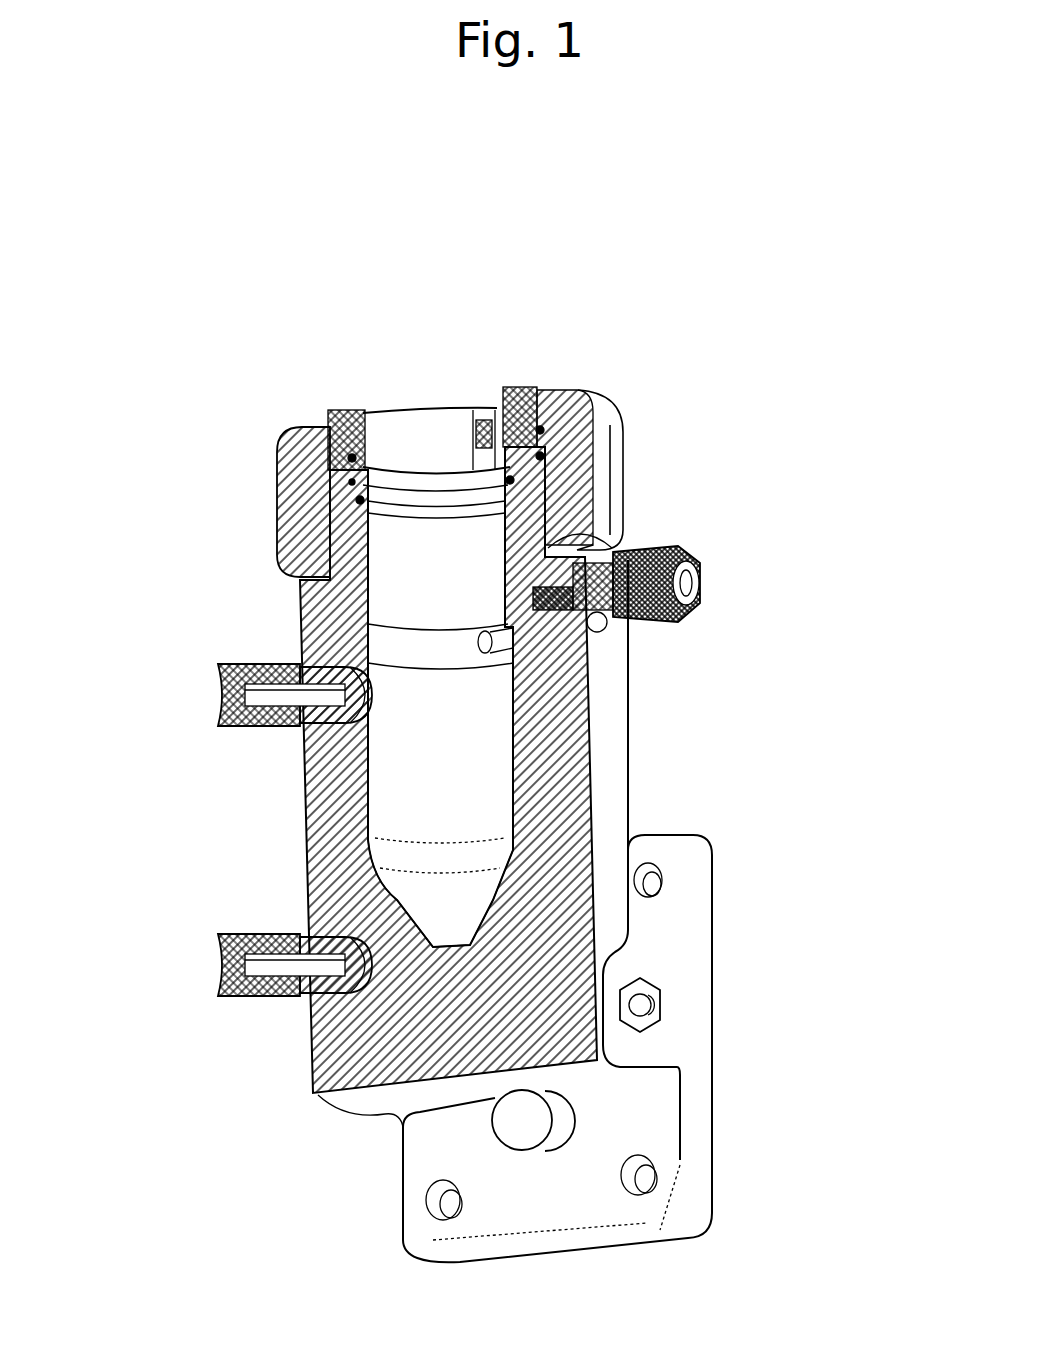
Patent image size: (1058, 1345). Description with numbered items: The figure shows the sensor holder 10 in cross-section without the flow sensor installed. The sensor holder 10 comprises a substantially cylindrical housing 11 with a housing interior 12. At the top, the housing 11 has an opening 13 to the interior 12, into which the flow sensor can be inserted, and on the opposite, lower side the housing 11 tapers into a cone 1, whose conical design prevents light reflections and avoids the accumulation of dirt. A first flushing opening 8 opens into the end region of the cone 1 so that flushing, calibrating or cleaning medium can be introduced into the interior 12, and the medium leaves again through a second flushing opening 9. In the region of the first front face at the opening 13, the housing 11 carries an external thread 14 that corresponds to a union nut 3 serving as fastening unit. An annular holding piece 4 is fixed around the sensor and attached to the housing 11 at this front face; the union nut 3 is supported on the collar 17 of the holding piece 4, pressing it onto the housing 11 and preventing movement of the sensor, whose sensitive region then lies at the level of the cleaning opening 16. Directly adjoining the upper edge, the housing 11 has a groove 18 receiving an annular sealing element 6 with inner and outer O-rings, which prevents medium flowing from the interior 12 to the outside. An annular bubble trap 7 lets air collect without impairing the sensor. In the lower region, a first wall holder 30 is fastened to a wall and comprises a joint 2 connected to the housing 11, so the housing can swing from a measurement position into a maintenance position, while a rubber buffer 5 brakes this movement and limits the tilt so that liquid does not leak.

The sensor holder 10 is at (178, 278).
The cone 1 is at (440, 855).
The joint 2 is at (682, 996).
The union nut 3 is at (618, 445).
The holding piece 4 is at (387, 445).
The buffer 5 is at (517, 1115).
The sealing element 6 is at (473, 485).
The bubble trap 7 is at (467, 657).
The first flushing opening 8 is at (222, 968).
The second flushing opening 9 is at (693, 617).
The housing 11 is at (323, 867).
The housing interior 12 is at (490, 793).
The opening 13 is at (456, 392).
The external thread 14 is at (567, 467).
The cleaning opening 16 is at (220, 688).
The collar 17 is at (553, 423).
The groove 18 is at (346, 410).
The first wall holder 30 is at (705, 928).